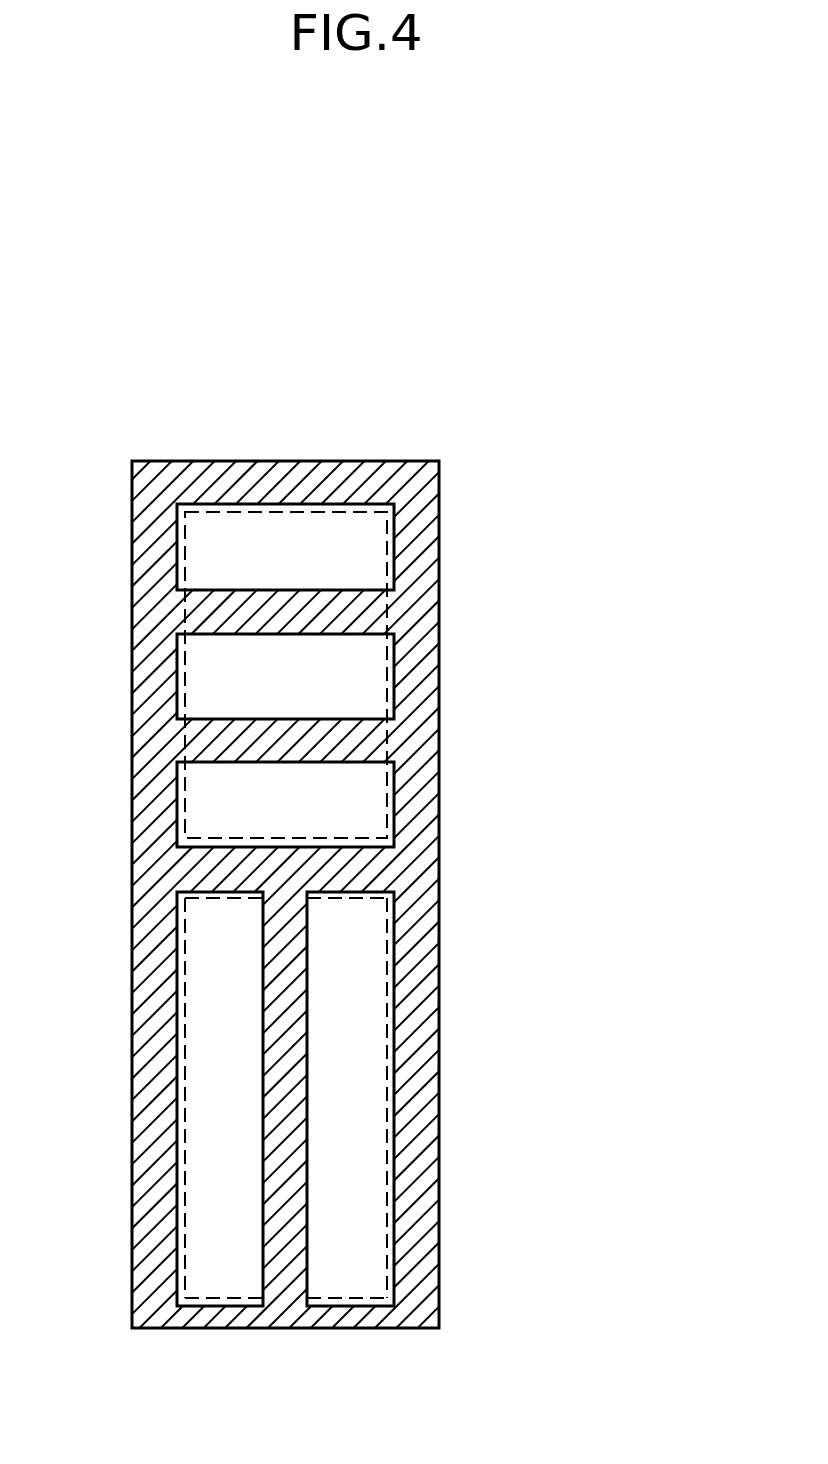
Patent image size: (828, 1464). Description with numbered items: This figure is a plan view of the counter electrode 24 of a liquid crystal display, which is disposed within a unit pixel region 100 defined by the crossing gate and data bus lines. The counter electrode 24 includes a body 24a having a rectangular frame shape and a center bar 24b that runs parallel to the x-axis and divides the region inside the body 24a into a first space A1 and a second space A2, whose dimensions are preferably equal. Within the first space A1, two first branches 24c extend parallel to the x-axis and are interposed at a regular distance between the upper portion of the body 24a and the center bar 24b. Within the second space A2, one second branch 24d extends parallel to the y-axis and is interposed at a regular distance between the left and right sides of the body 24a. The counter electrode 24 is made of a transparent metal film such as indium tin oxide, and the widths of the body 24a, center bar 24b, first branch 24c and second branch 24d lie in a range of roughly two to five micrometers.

The unit pixel region 100 is at (299, 443).
The counter electrode 24 is at (632, 1050).
The body 24a is at (425, 549).
The center bar 24b is at (380, 870).
The first branch 24c is at (382, 743).
The second branch 24d is at (287, 1072).
The first space A1 is at (187, 552).
The second space A2 is at (187, 1041).